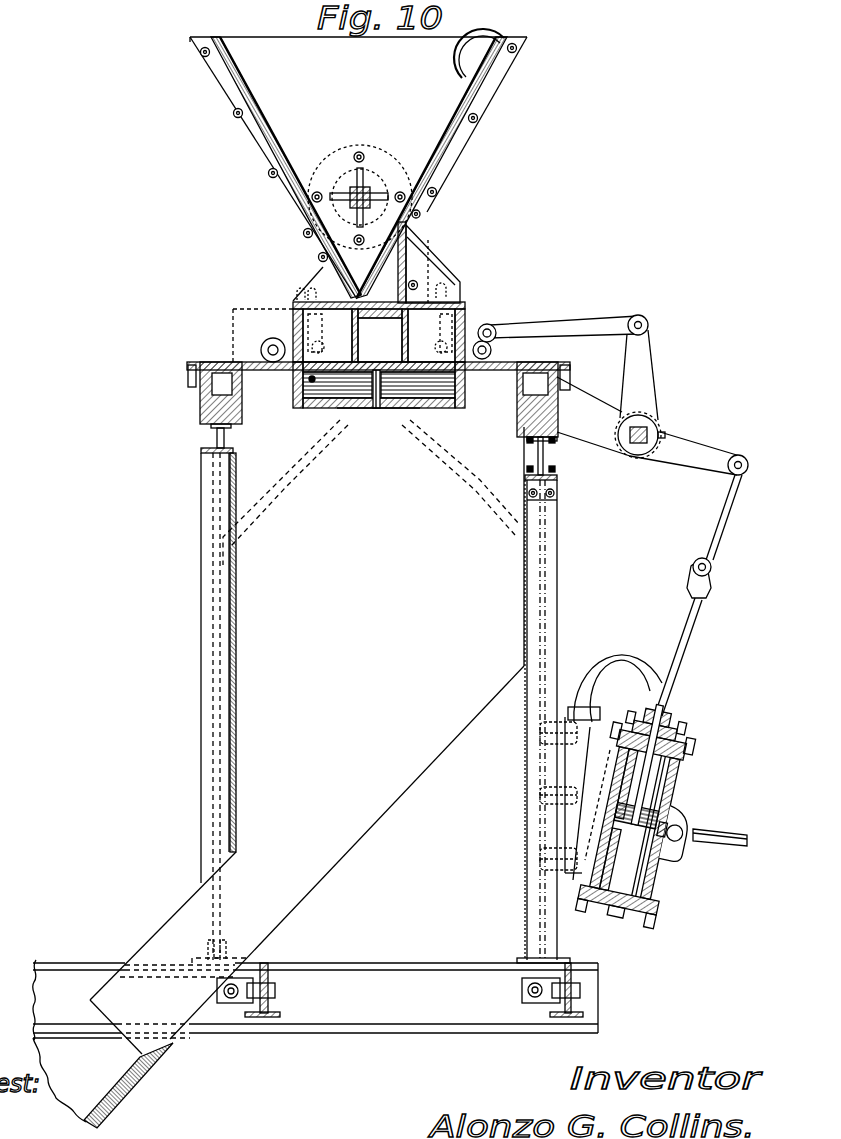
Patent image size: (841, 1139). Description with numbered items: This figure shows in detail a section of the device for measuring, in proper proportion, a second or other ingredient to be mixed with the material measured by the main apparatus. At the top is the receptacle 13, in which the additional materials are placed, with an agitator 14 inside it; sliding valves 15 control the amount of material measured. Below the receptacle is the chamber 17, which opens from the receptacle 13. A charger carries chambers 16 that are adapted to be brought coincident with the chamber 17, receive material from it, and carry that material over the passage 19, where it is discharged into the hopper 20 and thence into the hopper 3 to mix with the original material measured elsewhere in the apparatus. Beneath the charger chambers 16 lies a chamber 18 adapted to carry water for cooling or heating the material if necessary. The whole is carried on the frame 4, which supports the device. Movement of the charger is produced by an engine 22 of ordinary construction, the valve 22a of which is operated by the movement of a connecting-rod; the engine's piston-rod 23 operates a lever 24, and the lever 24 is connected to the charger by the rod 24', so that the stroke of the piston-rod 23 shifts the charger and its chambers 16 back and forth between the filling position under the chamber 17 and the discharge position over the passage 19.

The hopper 3 is at (75, 1080).
The frame 4 is at (315, 1000).
The receptacle 13 is at (358, 199).
The agitator 14 is at (356, 186).
The sliding valves 15 is at (442, 163).
The chambers 16 is at (376, 332).
The chamber 17 is at (414, 263).
The water chamber 18 is at (358, 396).
The passage 19 is at (378, 399).
The hopper 20 is at (327, 774).
The engine 22 is at (631, 793).
The valve 22a is at (676, 836).
The piston-rod 23 is at (691, 595).
The lever 24 is at (652, 402).
The rod 24' is at (563, 324).